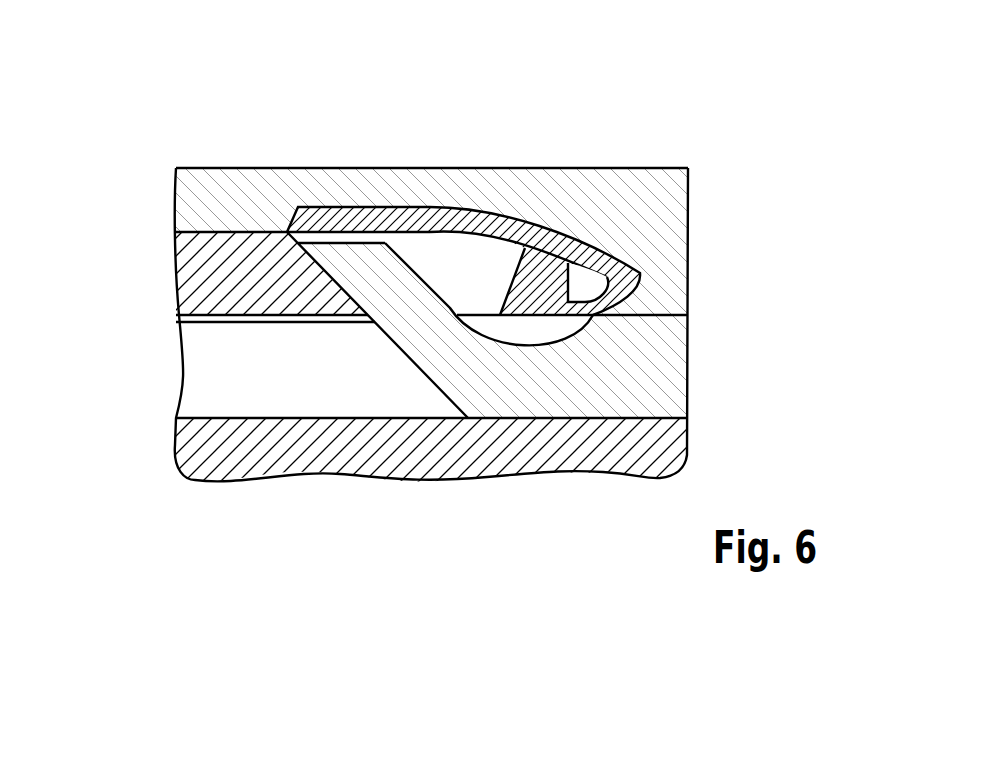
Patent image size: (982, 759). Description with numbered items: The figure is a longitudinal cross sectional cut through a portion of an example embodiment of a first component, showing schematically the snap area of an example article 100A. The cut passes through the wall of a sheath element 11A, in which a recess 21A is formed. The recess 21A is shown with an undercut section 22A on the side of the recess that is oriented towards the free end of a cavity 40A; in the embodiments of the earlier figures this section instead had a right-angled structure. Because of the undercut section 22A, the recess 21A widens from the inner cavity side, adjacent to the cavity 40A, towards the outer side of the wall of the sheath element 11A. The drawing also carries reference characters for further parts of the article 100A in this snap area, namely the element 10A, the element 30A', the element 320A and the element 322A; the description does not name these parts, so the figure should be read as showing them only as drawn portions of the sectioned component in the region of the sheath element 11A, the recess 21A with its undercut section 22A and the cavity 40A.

The article 100A is at (646, 140).
The sheath element 11A is at (657, 200).
The inner body 10A is at (200, 280).
The cavity 40A is at (216, 368).
The lower wall 320A is at (228, 400).
The undercut section 22A is at (306, 233).
The spring tongue 30A' is at (527, 189).
The recess 21A is at (477, 267).
The inclined groove 322A is at (371, 285).